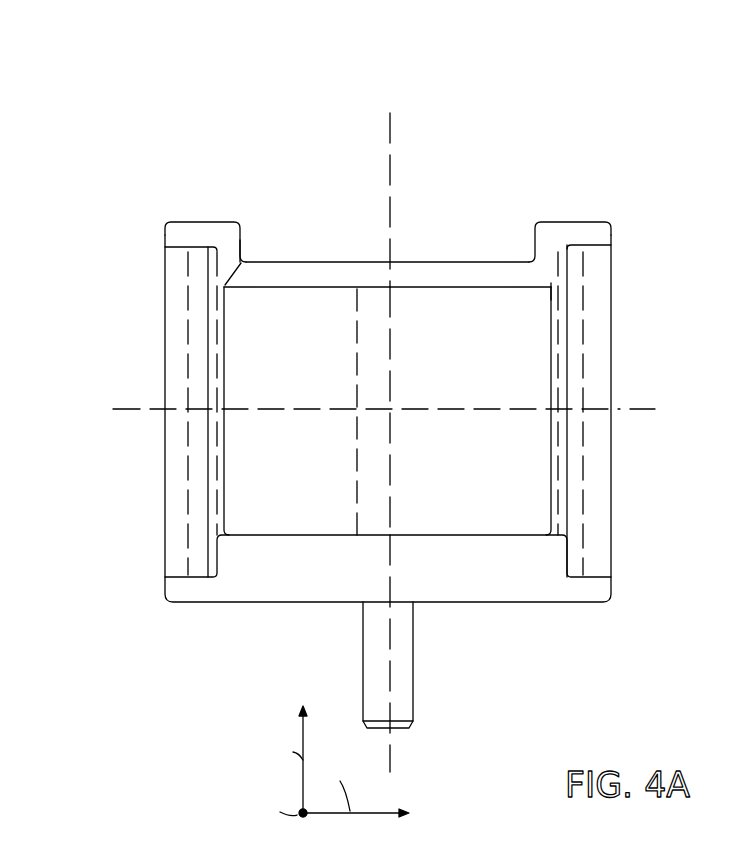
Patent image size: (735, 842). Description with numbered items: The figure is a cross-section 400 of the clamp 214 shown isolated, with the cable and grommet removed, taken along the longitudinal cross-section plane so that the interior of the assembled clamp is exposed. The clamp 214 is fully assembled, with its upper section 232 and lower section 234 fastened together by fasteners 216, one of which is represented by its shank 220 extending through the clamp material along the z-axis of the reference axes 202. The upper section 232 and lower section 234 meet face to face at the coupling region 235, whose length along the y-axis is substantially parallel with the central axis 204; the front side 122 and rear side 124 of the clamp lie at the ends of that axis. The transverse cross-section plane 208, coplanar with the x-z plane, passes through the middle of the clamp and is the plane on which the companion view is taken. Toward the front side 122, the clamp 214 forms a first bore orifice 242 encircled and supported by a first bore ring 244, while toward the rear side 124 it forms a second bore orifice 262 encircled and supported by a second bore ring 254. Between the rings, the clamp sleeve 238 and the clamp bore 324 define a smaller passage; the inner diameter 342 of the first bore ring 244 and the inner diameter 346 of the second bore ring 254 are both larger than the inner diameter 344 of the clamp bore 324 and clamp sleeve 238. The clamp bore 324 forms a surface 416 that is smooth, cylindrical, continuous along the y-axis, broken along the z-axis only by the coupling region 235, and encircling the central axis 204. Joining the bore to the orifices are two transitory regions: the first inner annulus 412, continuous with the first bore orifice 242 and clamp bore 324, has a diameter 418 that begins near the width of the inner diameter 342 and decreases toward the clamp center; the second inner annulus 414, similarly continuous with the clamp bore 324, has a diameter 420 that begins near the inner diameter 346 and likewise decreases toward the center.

The cross-section 400 is at (393, 362).
The transverse cross-section plane 208 is at (390, 155).
The clamp 214 is at (414, 178).
The upper section 232 is at (342, 261).
The second bore ring 254 is at (205, 230).
The first bore ring 244 is at (558, 232).
The clamp sleeve 238 is at (433, 272).
The second bore orifice 262 is at (178, 258).
The first bore orifice 242 is at (593, 258).
The diameter of the second inner annulus 420 is at (217, 303).
The coupling region 235 is at (197, 402).
The central axis 204 is at (138, 409).
The rear side 124 is at (103, 403).
The front side 122 is at (722, 410).
The inner diameter of the second bore ring 346 is at (188, 475).
The inner diameter of the clamp bore 344 is at (357, 480).
The inner diameter of the first bore ring 342 is at (585, 471).
The lower section 234 is at (253, 587).
The fasteners 216 is at (332, 682).
The reference axes 202 is at (262, 753).
The shank 220 is at (373, 637).
The second inner annulus 414 is at (224, 283).
The surface 416 is at (378, 323).
The first inner annulus 412 is at (553, 283).
The diameter of the first inner annulus 418 is at (555, 338).
The clamp bore 324 is at (402, 386).